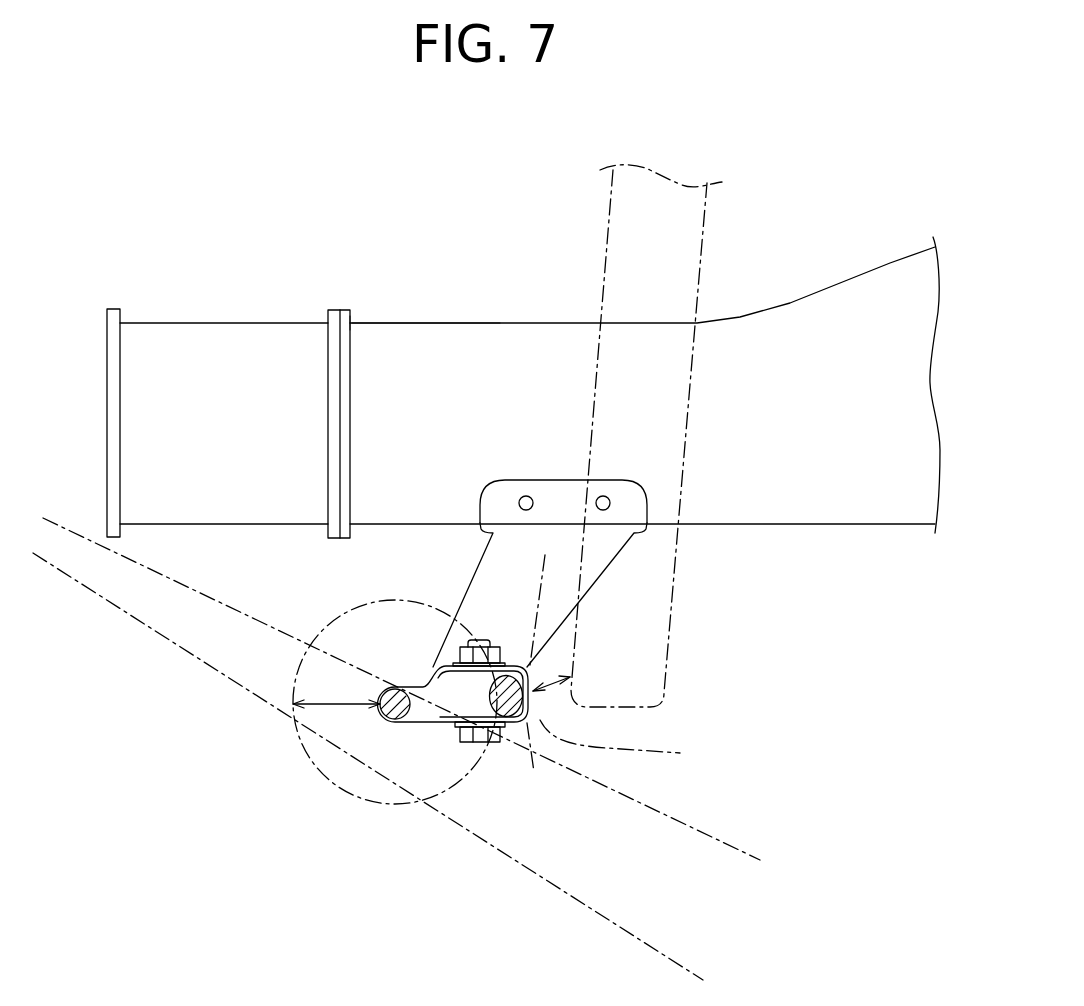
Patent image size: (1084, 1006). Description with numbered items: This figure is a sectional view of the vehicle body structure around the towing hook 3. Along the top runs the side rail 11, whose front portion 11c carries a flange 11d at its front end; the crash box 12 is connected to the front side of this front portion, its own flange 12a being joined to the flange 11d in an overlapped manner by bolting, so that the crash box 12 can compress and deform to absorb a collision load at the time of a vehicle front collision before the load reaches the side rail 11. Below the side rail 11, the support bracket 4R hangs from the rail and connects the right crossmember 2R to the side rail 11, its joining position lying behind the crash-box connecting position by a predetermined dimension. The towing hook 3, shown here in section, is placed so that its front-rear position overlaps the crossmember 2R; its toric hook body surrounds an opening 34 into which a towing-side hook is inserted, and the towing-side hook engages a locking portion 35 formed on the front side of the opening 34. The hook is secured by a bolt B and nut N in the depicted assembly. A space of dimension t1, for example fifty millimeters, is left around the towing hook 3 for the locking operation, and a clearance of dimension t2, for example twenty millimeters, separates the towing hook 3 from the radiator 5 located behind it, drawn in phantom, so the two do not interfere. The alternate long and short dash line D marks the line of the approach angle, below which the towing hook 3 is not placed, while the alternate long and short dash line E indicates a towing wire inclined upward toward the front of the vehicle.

The side rail 11 is at (523, 322).
The front portion of the side rail 11c is at (455, 348).
The flange of the side rail 11d is at (352, 315).
The crash box 12 is at (202, 345).
The flange of the crash box 12a is at (327, 315).
The radiator 5 is at (673, 598).
The support bracket 4R is at (477, 570).
The towing hook 3 is at (475, 701).
The opening 34 is at (443, 698).
The locking portion 35 is at (398, 706).
The right crossmember 2R is at (527, 723).
The nut N is at (494, 658).
The bolt B is at (477, 743).
The alternate long and short dash line E is at (273, 628).
The alternate long and short dash line D is at (487, 843).
The dimension t1 is at (336, 688).
The dimension t2 is at (549, 684).